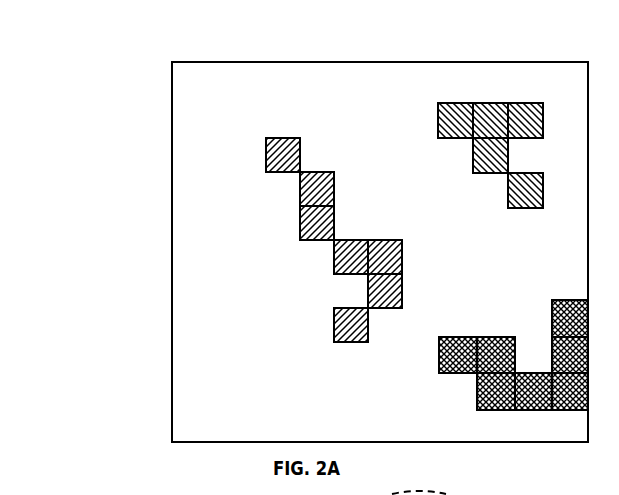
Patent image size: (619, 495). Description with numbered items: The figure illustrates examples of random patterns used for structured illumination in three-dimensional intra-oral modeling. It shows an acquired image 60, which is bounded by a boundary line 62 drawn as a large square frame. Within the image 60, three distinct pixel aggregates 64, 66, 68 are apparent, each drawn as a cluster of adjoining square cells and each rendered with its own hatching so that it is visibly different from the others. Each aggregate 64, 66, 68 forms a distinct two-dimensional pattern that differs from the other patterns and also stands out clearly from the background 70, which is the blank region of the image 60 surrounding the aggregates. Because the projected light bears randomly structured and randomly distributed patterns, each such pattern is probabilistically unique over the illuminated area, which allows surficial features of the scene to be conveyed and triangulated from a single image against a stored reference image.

The acquired image 60 is at (100, 317).
The boundary line 62 is at (172, 250).
The pixel aggregate 64 is at (299, 217).
The pixel aggregate 66 is at (473, 151).
The pixel aggregate 68 is at (440, 352).
The background 70 is at (252, 393).